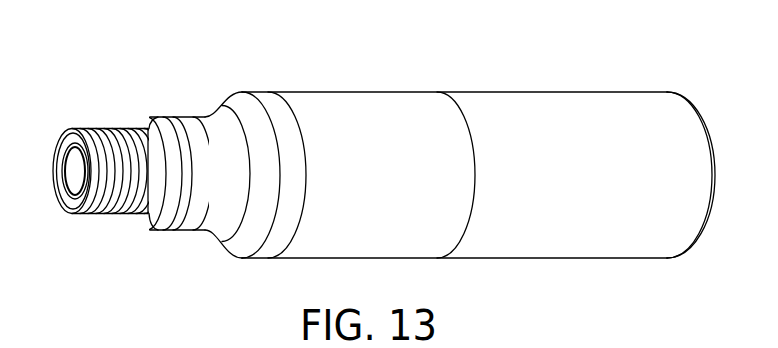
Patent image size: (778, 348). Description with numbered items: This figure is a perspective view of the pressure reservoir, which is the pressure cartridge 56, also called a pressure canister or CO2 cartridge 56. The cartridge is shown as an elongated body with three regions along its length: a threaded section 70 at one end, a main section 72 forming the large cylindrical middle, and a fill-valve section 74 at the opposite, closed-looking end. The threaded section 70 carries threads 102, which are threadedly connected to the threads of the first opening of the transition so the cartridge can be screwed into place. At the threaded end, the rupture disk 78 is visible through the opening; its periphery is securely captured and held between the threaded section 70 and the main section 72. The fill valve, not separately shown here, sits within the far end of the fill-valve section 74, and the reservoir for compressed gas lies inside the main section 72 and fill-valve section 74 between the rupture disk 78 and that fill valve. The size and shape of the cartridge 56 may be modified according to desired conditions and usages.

The pressure cartridge 56 is at (553, 67).
The main section 72 is at (315, 102).
The fill-valve section 74 is at (648, 117).
The threaded section 70 is at (148, 202).
The threads 102 is at (97, 128).
The rupture disk 78 is at (72, 177).